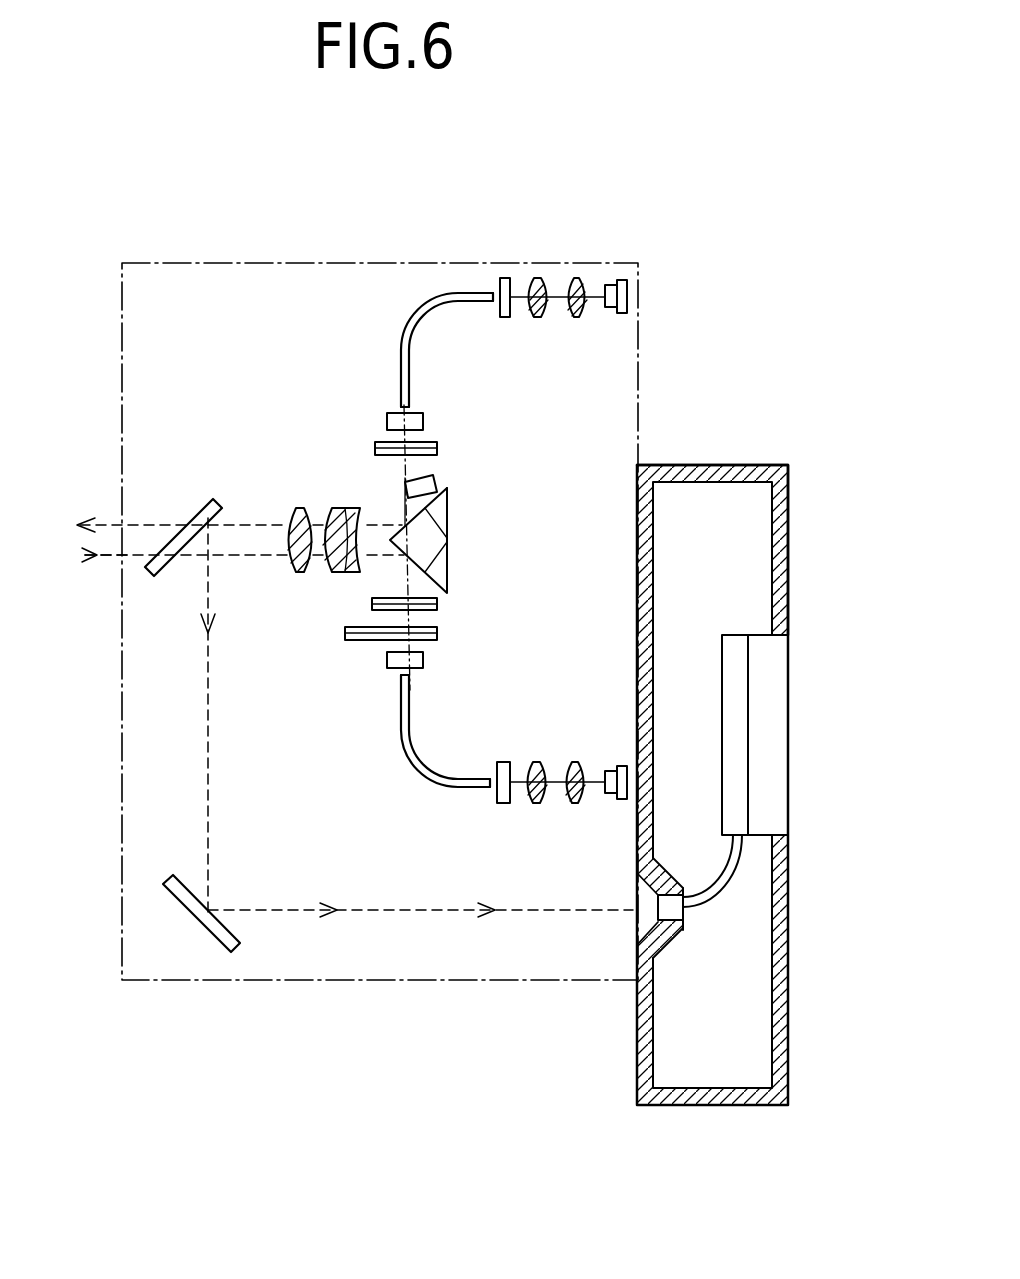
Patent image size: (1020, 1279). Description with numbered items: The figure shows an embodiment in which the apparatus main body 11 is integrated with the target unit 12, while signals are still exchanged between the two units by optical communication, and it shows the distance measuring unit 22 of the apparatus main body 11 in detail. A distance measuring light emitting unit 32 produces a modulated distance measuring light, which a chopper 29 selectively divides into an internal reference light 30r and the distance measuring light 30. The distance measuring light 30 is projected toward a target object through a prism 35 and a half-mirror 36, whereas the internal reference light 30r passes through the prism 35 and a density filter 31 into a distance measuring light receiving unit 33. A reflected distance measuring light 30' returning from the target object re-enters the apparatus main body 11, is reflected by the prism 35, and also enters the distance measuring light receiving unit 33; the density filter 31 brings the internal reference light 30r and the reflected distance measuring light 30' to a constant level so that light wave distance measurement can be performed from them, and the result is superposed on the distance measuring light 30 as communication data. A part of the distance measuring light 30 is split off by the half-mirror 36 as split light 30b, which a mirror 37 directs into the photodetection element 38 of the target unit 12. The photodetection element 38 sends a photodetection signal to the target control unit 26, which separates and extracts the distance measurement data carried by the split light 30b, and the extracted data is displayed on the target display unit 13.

The apparatus main body 11 is at (425, 262).
The target unit 12 is at (788, 935).
The target display unit 13 is at (788, 768).
The distance measuring unit 22 is at (393, 327).
The target control unit 26 is at (735, 635).
The chopper 29 is at (437, 446).
The distance measuring light 30 is at (240, 647).
The reflected distance measuring light 30' is at (96, 626).
The internal reference light 30r is at (447, 512).
The split light 30b is at (372, 910).
The density filter 31 is at (355, 640).
The distance measuring light emitting unit 32 is at (572, 259).
The distance measuring light receiving unit 33 is at (540, 743).
The prism 35 is at (447, 567).
The half-mirror 36 is at (200, 503).
The mirror 37 is at (190, 915).
The photodetection element 38 is at (690, 915).